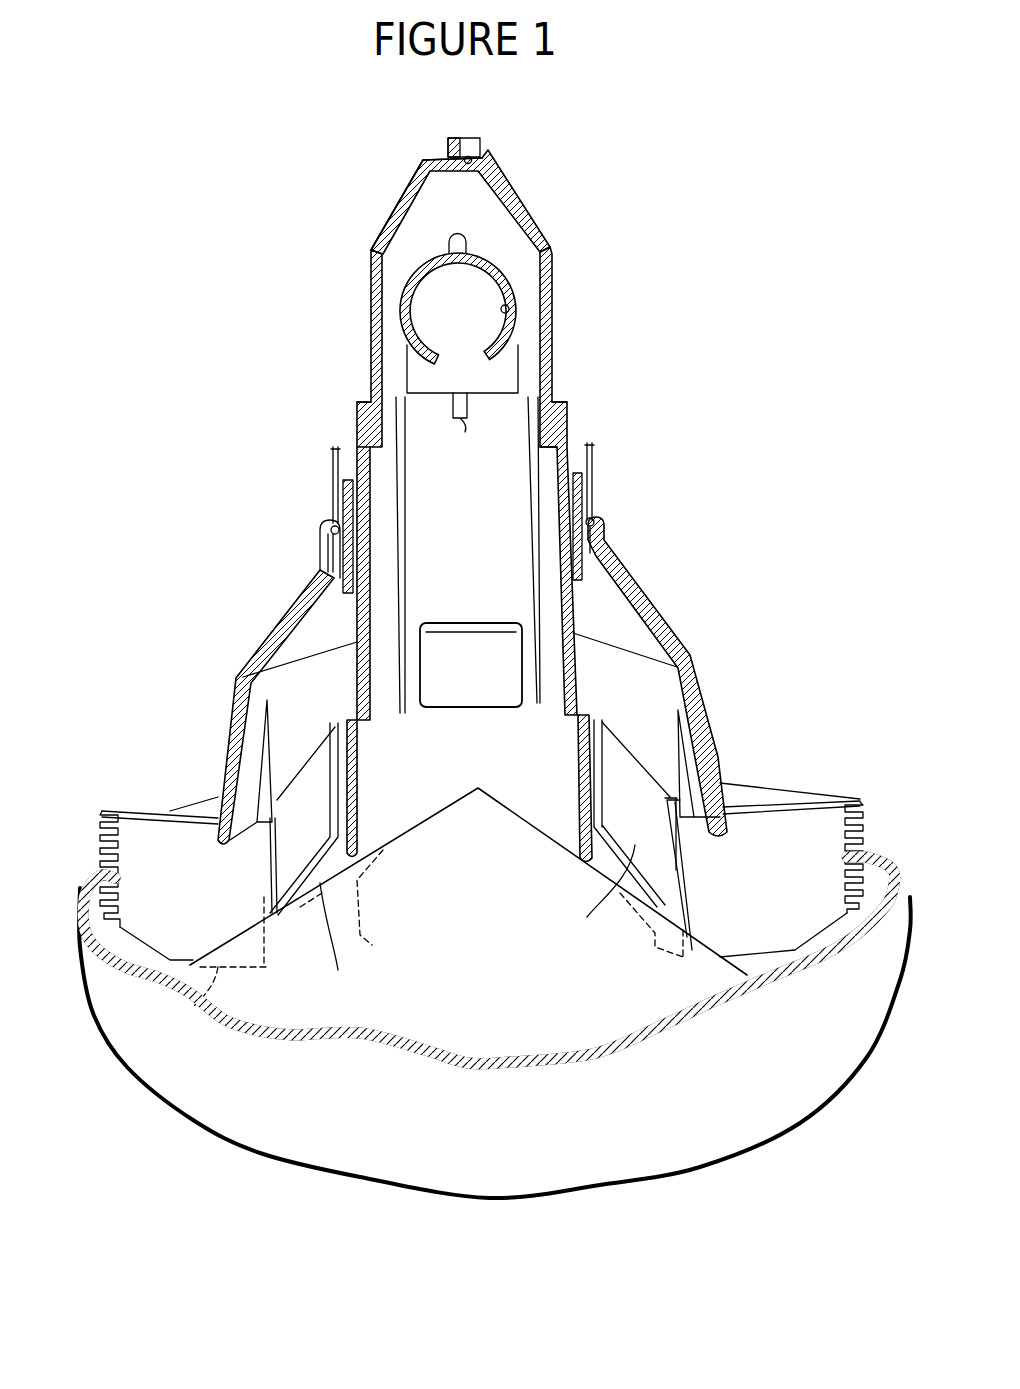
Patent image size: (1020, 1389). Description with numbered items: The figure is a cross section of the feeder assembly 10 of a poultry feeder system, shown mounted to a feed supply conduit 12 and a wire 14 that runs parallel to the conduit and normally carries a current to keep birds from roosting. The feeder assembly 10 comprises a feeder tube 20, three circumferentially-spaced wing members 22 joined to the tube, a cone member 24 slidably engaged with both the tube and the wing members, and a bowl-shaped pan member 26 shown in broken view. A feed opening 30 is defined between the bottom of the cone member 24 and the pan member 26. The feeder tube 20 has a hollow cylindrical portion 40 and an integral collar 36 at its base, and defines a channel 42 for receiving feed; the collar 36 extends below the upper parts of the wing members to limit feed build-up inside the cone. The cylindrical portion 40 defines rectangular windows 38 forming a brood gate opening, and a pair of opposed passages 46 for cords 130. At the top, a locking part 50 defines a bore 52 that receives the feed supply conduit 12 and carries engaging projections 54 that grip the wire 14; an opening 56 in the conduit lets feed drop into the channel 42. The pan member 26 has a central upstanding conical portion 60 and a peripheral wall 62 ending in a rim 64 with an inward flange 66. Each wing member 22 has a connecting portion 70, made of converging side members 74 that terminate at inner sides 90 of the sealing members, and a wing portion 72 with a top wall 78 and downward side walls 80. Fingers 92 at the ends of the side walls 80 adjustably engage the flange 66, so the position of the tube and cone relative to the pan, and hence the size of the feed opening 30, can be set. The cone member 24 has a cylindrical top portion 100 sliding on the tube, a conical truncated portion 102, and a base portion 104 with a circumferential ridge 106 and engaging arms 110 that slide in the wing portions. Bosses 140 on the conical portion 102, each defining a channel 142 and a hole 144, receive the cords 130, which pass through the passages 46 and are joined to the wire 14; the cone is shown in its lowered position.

The feeder assembly 10 is at (704, 481).
The feed supply conduit 12 is at (508, 280).
The wire 14 is at (480, 150).
The feeder tube 20 is at (551, 336).
The wing members 22 is at (132, 811).
The cone member 24 is at (680, 644).
The pan member 26 is at (300, 1164).
The feed opening 30 is at (731, 828).
The collar 36 is at (360, 812).
The rectangular windows 38 is at (482, 700).
The cylindrical portion 40 is at (570, 400).
The channel 42 is at (373, 610).
The passages 46 is at (465, 432).
The locking part 50 is at (390, 210).
The bore 52 is at (510, 313).
The engaging projections 54 is at (463, 137).
The opening 56 is at (448, 353).
The conical portion 60 is at (449, 931).
The peripheral wall 62 is at (134, 1034).
The rim 64 is at (120, 892).
The inward flange 66 is at (115, 880).
The connecting portion 70 is at (467, 916).
The wing portion 72 is at (202, 1008).
The side members 74 is at (295, 828).
The top wall 78 is at (170, 811).
The side walls 80 is at (204, 894).
The inner sides 90 is at (287, 960).
The fingers 92 is at (102, 811).
The top portion 100 is at (343, 500).
The conical truncated portion 102 is at (657, 613).
The base portion 104 is at (240, 690).
The circumferential ridge 106 is at (232, 757).
The engaging arms 110 is at (286, 745).
The cords 130 is at (329, 450).
The bosses 140 is at (317, 545).
The channel 142 is at (327, 557).
The hole 144 is at (332, 517).